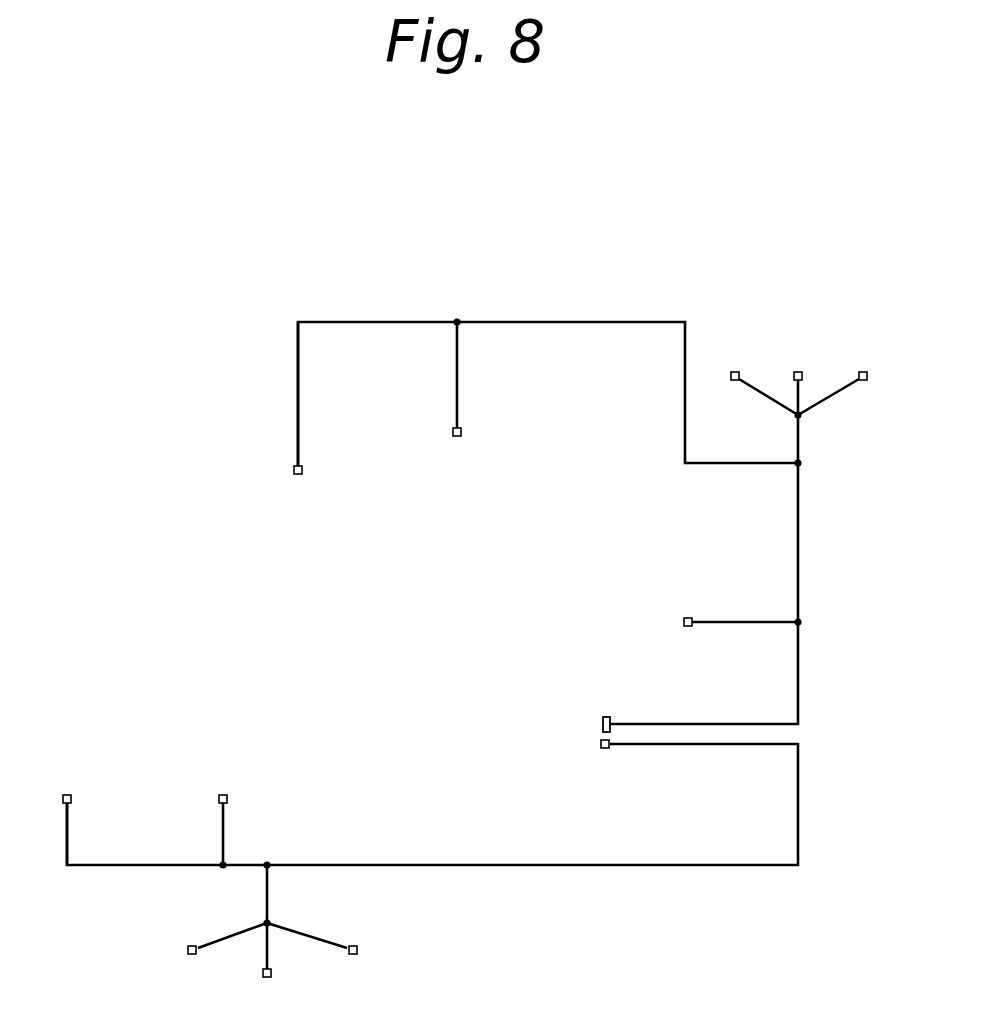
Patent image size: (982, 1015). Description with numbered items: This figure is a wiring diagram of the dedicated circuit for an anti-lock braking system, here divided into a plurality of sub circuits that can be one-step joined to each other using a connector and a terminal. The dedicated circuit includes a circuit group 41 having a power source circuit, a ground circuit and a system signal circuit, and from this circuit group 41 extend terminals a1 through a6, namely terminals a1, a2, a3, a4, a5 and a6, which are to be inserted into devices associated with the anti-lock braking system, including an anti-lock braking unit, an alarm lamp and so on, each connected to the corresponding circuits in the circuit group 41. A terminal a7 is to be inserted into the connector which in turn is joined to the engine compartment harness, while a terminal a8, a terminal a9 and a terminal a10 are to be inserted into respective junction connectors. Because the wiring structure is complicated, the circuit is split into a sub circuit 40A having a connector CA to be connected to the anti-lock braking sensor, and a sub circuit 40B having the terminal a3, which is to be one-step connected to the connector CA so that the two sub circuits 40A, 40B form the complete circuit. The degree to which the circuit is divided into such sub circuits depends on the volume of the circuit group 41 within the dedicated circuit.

The circuit group 41 is at (550, 322).
The sub circuit 40A is at (496, 564).
The sub circuit 40B is at (438, 805).
The terminal a1 is at (297, 417).
The terminal a2 is at (726, 621).
The terminal a3 is at (593, 731).
The terminal a4 is at (327, 943).
The terminal a5 is at (265, 935).
The terminal a6 is at (211, 948).
The terminal a7 is at (799, 402).
The terminal a8 is at (451, 393).
The terminal a9 is at (217, 819).
The terminal a10 is at (64, 817).
The connector CA is at (602, 709).